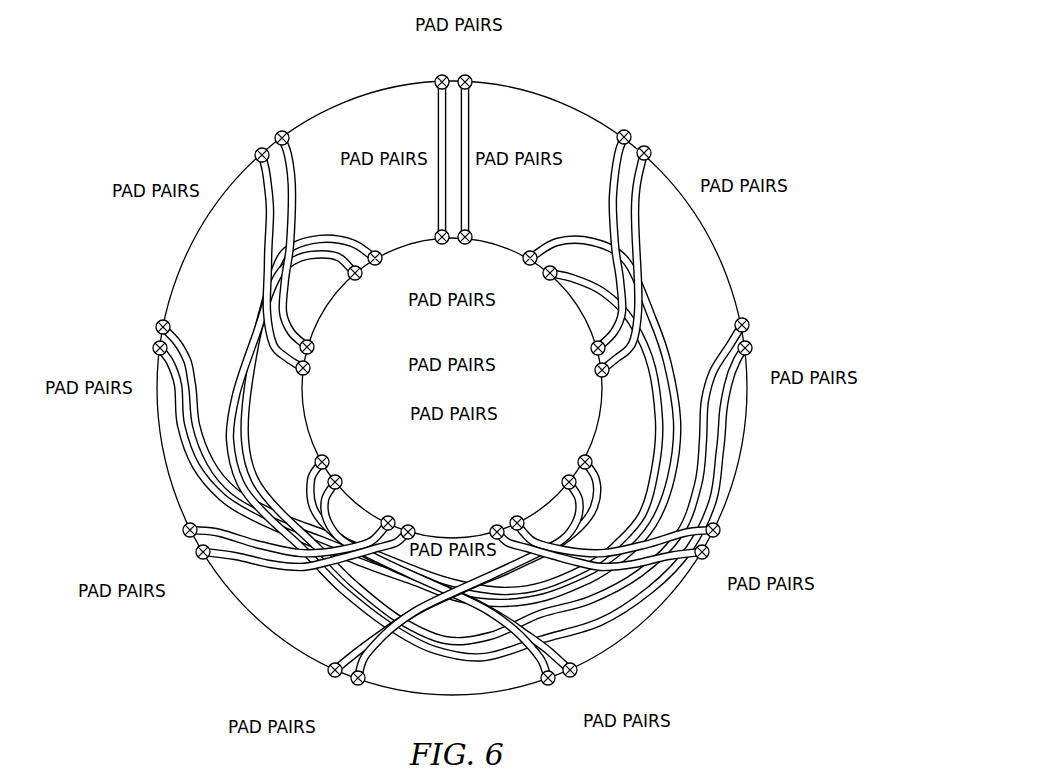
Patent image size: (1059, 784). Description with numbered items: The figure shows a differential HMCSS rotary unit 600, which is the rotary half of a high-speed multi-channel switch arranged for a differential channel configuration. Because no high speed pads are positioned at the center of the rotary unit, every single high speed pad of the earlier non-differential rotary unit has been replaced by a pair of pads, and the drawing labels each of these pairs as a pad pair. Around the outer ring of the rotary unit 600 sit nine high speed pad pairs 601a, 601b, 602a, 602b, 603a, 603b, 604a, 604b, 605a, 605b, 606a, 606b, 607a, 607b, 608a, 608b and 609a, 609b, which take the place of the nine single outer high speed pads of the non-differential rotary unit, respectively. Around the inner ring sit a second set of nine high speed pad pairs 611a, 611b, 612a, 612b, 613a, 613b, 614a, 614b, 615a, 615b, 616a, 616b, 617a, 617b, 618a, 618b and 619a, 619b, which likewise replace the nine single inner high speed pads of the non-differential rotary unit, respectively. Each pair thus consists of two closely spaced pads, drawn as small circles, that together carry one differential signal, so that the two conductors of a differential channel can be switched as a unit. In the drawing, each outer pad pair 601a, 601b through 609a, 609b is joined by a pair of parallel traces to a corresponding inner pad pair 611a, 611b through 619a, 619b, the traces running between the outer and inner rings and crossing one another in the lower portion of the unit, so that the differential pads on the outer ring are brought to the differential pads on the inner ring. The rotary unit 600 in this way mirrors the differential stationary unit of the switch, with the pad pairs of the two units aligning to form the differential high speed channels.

The differential HMCSS rotary unit 600 is at (612, 70).
The high speed pad pair 601a is at (437, 76).
The high speed pad pair 601b is at (468, 76).
The high speed pad pair 602a is at (256, 155).
The high speed pad pair 602b is at (275, 136).
The high speed pad pair 603a is at (153, 349).
The high speed pad pair 603b is at (156, 327).
The high speed pad pair 604a is at (196, 554).
The high speed pad pair 604b is at (183, 530).
The high speed pad pair 605a is at (353, 683).
The high speed pad pair 605b is at (328, 671).
The high speed pad pair 606a is at (577, 670).
The high speed pad pair 606b is at (555, 682).
The high speed pad pair 607a is at (720, 530).
The high speed pad pair 607b is at (709, 553).
The high speed pad pair 608a is at (750, 325).
The high speed pad pair 608b is at (752, 348).
The high speed pad pair 609a is at (632, 137).
The high speed pad pair 609b is at (651, 154).
The high speed pad pair 611a is at (440, 245).
The high speed pad pair 611b is at (467, 245).
The high speed pad pair 612a is at (353, 266).
The high speed pad pair 612b is at (375, 251).
The high speed pad pair 613a is at (311, 368).
The high speed pad pair 613b is at (315, 347).
The high speed pad pair 614a is at (340, 475).
The high speed pad pair 614b is at (327, 456).
The high speed pad pair 615a is at (408, 525).
The high speed pad pair 615b is at (388, 516).
The high speed pad pair 616a is at (517, 516).
The high speed pad pair 616b is at (497, 525).
The high speed pad pair 617a is at (580, 456).
The high speed pad pair 617b is at (565, 475).
The high speed pad pair 618a is at (590, 348).
The high speed pad pair 618b is at (594, 370).
The high speed pad pair 619a is at (530, 251).
The high speed pad pair 619b is at (550, 266).